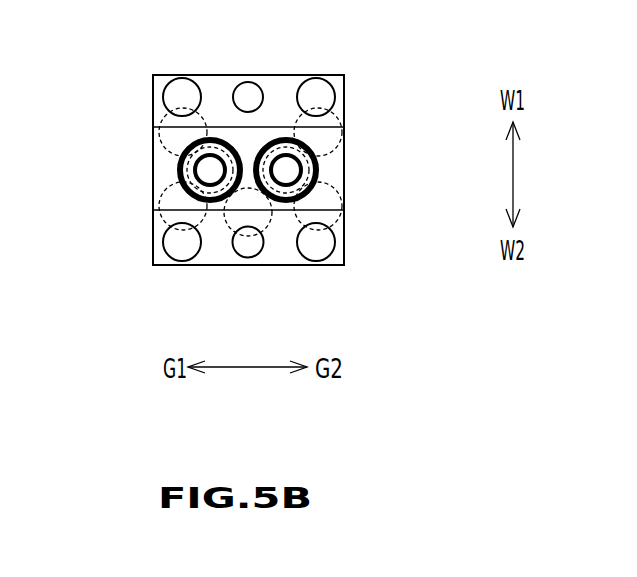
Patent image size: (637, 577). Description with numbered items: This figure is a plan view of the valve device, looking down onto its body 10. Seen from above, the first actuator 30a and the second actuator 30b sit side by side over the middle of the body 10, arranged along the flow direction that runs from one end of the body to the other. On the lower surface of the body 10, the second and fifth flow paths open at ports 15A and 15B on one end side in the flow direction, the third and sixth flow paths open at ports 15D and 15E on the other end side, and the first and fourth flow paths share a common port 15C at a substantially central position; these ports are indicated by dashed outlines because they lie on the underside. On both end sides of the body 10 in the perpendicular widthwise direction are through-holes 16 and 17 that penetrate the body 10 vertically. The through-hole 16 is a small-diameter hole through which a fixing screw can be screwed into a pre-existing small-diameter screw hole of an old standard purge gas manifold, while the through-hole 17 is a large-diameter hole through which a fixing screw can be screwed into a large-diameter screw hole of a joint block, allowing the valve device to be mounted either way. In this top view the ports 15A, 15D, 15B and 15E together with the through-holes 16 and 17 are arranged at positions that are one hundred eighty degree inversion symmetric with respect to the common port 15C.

The body 10 is at (345, 99).
The small-diameter through-hole 16 is at (246, 86).
The large-diameter through-hole 17 is at (185, 95).
The port 15A is at (145, 137).
The port 15B is at (150, 195).
The common port 15C is at (260, 210).
The port 15D is at (350, 137).
The port 15E is at (350, 195).
The first actuator 30a is at (178, 170).
The second actuator 30b is at (318, 168).